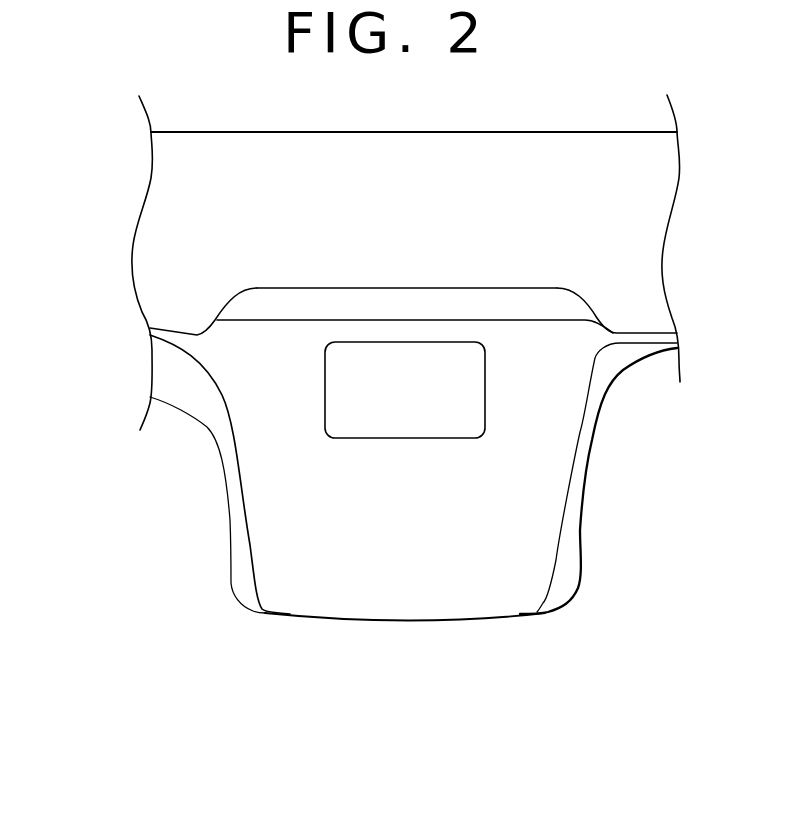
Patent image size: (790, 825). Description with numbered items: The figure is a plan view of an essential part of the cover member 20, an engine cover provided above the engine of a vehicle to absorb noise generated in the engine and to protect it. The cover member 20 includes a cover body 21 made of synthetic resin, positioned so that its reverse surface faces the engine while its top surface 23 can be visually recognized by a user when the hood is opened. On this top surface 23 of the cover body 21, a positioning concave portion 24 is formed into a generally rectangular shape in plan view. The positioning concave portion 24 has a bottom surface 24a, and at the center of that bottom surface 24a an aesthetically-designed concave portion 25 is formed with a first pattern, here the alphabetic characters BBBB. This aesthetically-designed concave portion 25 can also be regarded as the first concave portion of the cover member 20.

The cover member 20 is at (148, 634).
The cover body 21 is at (157, 242).
The top surface 23 is at (552, 475).
The positioning concave portion 24 is at (403, 438).
The bottom surface 24a is at (412, 391).
The aesthetically-designed concave portion 25 is at (358, 388).